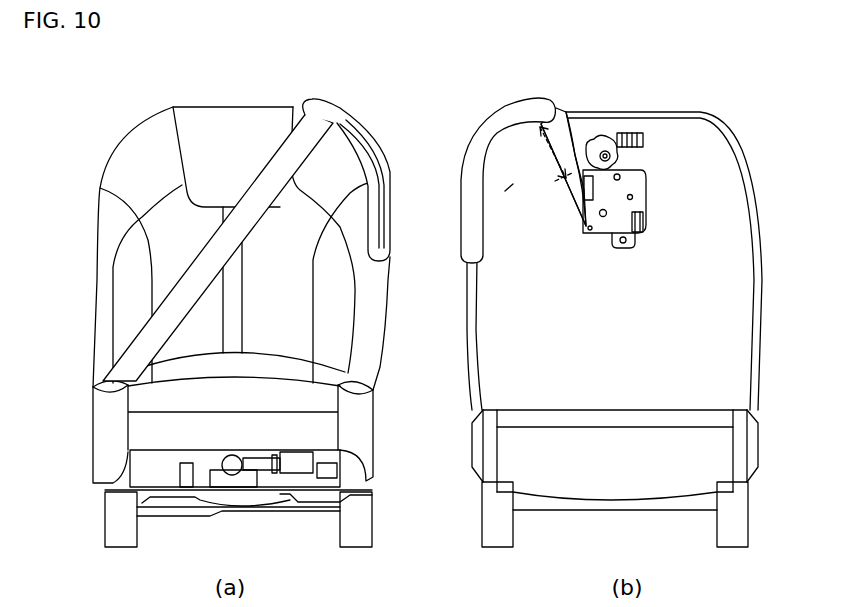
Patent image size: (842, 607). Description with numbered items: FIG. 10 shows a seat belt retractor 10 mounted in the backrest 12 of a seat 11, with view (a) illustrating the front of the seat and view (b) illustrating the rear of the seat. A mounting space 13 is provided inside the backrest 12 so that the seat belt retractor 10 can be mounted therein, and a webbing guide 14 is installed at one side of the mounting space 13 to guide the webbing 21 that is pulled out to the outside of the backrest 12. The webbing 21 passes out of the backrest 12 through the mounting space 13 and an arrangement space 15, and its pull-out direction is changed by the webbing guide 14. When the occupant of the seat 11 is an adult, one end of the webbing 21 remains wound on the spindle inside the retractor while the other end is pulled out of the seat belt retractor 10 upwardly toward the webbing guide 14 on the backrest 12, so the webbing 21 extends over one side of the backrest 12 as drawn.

The seat belt retractor 10 is at (662, 176).
The seat 11 is at (137, 434).
The backrest 12 is at (122, 270).
The mounting space 13 is at (611, 135).
The webbing guide 14 is at (496, 131).
The arrangement space 15 is at (505, 191).
The webbing 21 is at (266, 190).